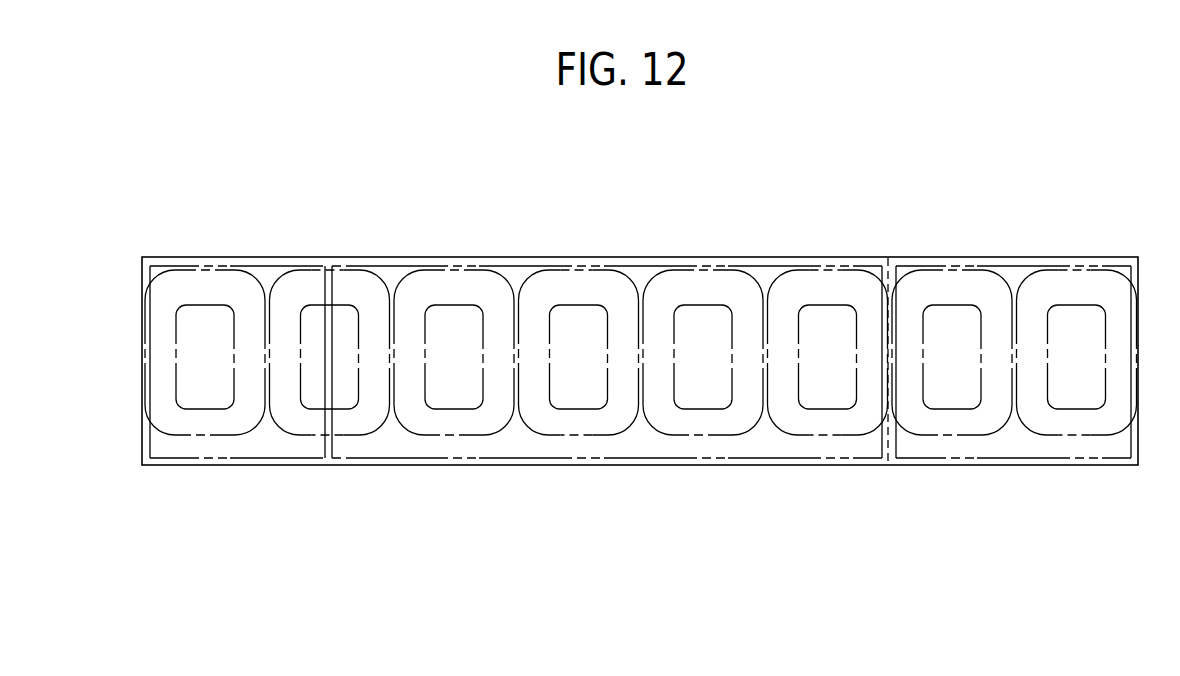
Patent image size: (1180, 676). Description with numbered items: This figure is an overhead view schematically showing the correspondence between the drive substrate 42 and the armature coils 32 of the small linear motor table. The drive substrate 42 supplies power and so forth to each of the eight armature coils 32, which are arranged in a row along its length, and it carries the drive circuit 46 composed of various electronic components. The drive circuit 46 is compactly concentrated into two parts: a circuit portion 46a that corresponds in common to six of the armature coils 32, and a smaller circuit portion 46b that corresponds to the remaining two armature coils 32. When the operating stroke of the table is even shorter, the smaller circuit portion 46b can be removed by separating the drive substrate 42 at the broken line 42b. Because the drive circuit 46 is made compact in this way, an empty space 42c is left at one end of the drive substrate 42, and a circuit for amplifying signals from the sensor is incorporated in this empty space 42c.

The armature coils 32 is at (473, 437).
The drive substrate 42 is at (1140, 250).
The broken line 42b is at (877, 463).
The empty space 42c is at (275, 460).
The drive circuit 46 is at (731, 344).
The circuit portion 46a is at (800, 460).
The circuit portion 46b is at (1013, 407).